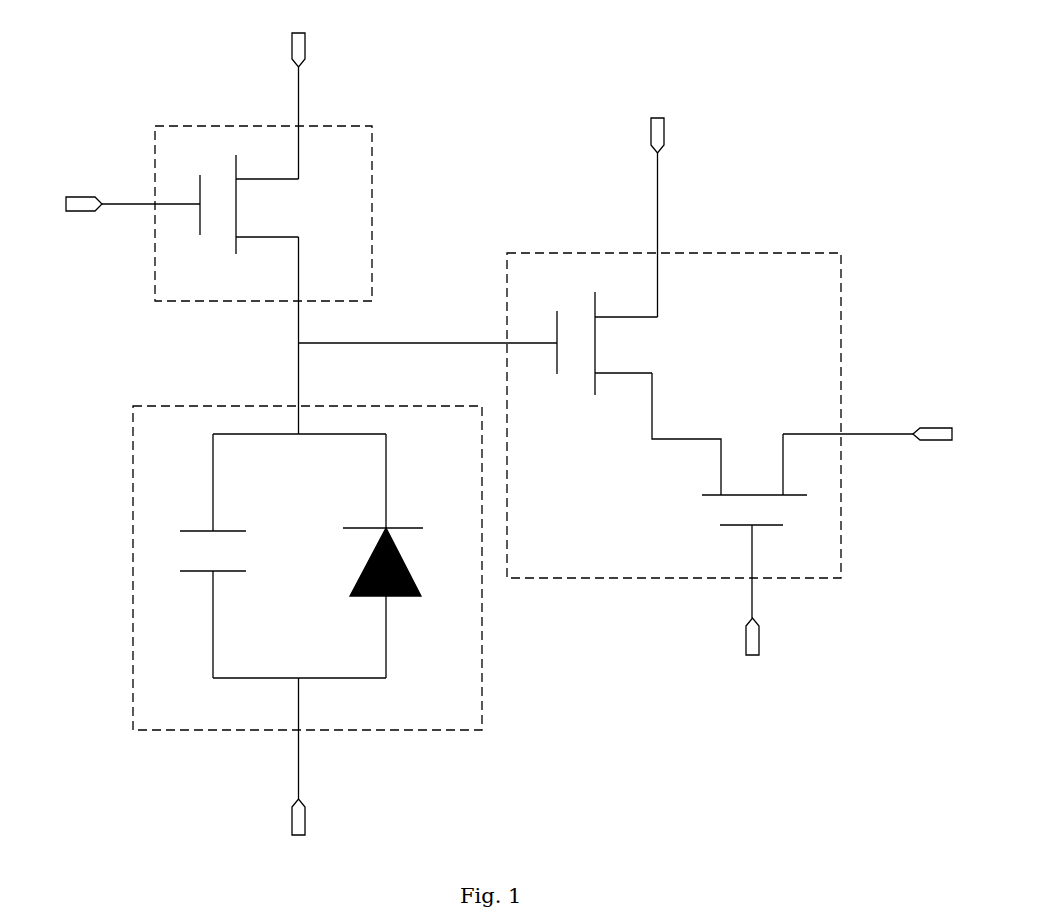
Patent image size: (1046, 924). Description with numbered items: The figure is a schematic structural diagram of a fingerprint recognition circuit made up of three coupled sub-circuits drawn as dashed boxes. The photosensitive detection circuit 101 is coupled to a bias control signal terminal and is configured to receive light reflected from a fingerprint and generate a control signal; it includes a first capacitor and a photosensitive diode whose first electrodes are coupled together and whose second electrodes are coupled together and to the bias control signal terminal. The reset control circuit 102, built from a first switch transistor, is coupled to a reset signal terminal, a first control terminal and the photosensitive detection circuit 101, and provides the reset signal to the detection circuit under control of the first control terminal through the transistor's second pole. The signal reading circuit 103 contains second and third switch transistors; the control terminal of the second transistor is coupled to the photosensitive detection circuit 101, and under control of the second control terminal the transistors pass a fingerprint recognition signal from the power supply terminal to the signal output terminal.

The photosensitive detection circuit 101 is at (133, 508).
The reset control circuit 102 is at (190, 126).
The signal reading circuit 103 is at (775, 253).